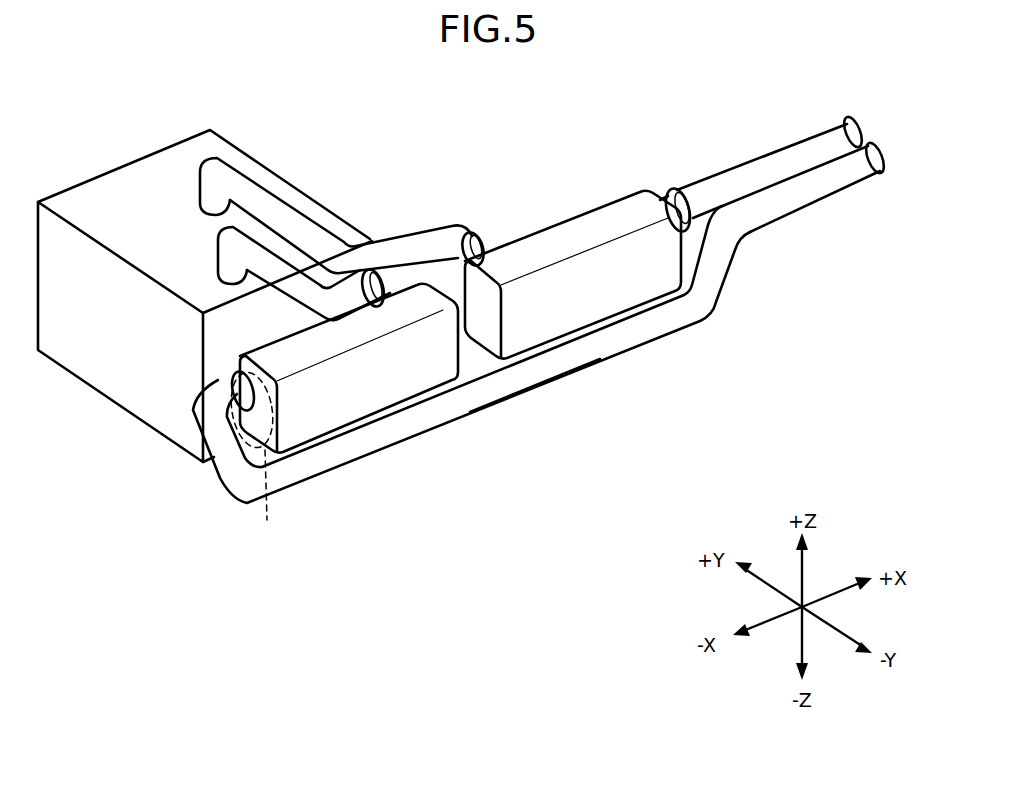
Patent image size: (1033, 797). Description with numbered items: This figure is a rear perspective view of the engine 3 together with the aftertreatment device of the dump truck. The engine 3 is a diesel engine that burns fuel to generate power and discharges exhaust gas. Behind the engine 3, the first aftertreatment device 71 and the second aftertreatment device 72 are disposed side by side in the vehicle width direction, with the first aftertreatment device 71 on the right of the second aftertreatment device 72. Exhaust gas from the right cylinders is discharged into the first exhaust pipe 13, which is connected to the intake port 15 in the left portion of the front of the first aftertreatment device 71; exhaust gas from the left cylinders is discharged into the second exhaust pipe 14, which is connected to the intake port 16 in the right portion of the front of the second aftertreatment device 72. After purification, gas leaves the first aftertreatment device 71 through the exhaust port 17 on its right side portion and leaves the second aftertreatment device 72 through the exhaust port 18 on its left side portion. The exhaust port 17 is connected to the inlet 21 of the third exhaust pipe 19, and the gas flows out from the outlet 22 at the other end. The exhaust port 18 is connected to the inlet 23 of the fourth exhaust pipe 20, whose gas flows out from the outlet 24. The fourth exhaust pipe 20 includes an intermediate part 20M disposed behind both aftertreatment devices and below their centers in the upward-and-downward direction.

The engine 3 is at (107, 190).
The first exhaust pipe 13 is at (413, 238).
The second exhaust pipe 14 is at (297, 293).
The intake port 15 is at (461, 250).
The intake port 16 is at (355, 284).
The exhaust port 17 is at (695, 210).
The exhaust port 18 is at (229, 396).
The third exhaust pipe 19 is at (773, 167).
The fourth exhaust pipe 20 is at (223, 463).
The intermediate part 20M is at (505, 388).
The inlet 21 is at (658, 192).
The outlet 22 is at (857, 130).
The inlet 23 is at (267, 520).
The outlet 24 is at (887, 157).
The first aftertreatment device 71 is at (602, 302).
The second aftertreatment device 72 is at (367, 392).